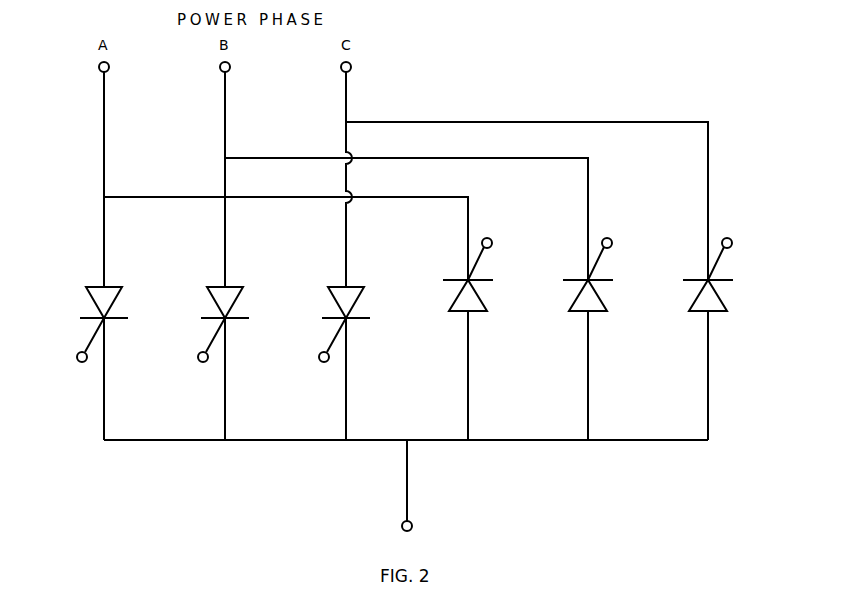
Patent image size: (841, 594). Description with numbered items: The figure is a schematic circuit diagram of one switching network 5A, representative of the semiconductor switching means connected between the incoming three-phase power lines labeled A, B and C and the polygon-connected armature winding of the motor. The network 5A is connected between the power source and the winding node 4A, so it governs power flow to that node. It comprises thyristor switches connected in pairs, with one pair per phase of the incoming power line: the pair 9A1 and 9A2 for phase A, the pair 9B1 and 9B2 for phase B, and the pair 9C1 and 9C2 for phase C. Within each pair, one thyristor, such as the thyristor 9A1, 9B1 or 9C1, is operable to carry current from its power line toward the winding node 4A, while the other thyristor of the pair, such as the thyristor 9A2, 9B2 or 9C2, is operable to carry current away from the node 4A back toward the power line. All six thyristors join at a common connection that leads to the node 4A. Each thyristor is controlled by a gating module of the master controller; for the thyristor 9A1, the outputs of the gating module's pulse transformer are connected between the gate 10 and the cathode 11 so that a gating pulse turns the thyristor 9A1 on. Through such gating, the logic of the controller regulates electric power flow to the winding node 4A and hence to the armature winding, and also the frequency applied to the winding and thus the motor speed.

The thyristor 9A1 is at (116, 286).
The thyristor 9B1 is at (237, 286).
The thyristor 9C1 is at (358, 286).
The thyristor 9A2 is at (479, 312).
The thyristor 9B2 is at (597, 312).
The thyristor 9C2 is at (719, 312).
The gate 10 is at (76, 371).
The cathode 11 is at (109, 362).
The switching network 5A is at (270, 462).
The node 4A is at (413, 524).